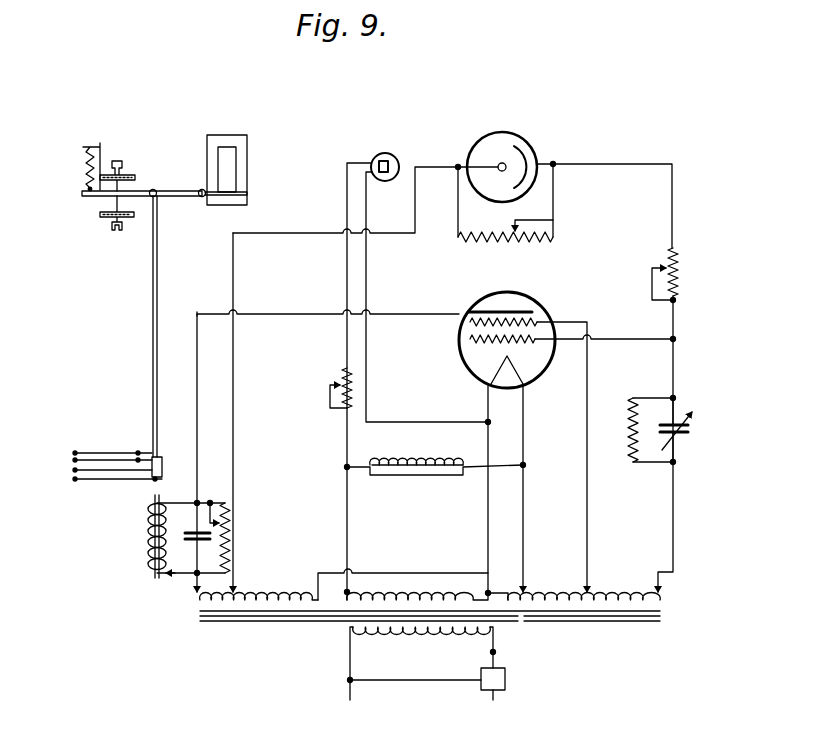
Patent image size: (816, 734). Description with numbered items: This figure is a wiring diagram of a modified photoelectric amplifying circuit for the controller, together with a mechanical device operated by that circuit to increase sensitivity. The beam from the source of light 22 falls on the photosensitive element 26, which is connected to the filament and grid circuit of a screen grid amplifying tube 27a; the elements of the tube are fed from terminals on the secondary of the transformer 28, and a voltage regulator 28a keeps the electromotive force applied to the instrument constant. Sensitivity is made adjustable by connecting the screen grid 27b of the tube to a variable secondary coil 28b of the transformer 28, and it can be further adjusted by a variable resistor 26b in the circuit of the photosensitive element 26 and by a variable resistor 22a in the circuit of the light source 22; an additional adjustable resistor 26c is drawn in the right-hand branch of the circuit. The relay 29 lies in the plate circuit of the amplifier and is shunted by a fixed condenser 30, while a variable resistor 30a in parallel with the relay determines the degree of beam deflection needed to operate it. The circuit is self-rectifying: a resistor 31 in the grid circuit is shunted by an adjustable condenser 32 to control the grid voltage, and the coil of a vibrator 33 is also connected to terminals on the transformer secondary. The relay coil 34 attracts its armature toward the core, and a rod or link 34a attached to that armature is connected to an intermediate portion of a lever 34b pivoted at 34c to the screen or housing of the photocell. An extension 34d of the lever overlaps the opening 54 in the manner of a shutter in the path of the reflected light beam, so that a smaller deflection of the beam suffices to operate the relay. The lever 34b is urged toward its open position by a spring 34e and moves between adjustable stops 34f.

The source of light 22 is at (384, 152).
The variable resistor 22a is at (341, 373).
The photosensitive element 26 is at (538, 160).
The variable resistor 26b is at (556, 239).
The adjustable resistor 26c is at (679, 268).
The screen grid amplifying tube 27a is at (548, 328).
The screen grid 27b is at (512, 310).
The transformer 28 is at (550, 623).
The voltage regulator 28a is at (512, 683).
The variable secondary coil 28b is at (612, 585).
The relay 29 is at (142, 520).
The fixed condenser 30 is at (205, 547).
The variable resistor 30a is at (238, 521).
The resistor 31 is at (629, 428).
The adjustable condenser 32 is at (690, 433).
The vibrator 33 is at (415, 460).
The coil 34 is at (150, 552).
The rod or link 34a is at (152, 321).
The lever 34b is at (176, 190).
The pivot 34c is at (202, 198).
The extension 34d is at (247, 193).
The spring 34e is at (88, 178).
The adjustable stops 34f is at (122, 166).
The opening 54 is at (226, 148).